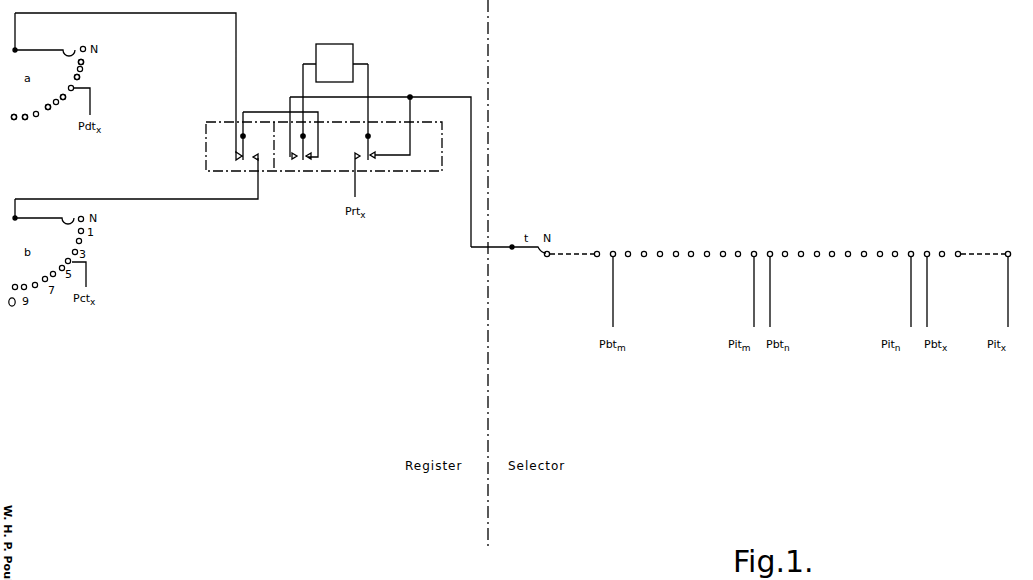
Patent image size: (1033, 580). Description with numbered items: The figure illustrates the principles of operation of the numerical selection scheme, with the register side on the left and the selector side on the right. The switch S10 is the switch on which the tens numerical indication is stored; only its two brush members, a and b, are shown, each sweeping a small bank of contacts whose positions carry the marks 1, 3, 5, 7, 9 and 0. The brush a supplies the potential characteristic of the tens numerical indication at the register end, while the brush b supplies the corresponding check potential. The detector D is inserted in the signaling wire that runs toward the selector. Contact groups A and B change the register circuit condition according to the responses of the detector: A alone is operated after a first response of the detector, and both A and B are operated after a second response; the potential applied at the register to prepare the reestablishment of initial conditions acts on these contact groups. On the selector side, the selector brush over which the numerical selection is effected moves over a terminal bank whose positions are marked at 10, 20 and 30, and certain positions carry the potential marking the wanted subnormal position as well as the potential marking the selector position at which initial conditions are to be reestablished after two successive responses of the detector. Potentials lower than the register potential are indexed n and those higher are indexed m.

The switch S10 is at (124, 83).
The bank contact 1 is at (86, 63).
The bank contact 3 is at (81, 79).
The bank contact 5 is at (67, 101).
The bank contact 7 is at (50, 114).
The bank contact 9 is at (26, 124).
The bank contact 0 is at (13, 123).
The selector contact 10 is at (613, 281).
The selector contact 20 is at (769, 281).
The selector contact 30 is at (926, 281).
The contact group A is at (266, 136).
The contact group B is at (380, 155).
The detector D is at (335, 63).